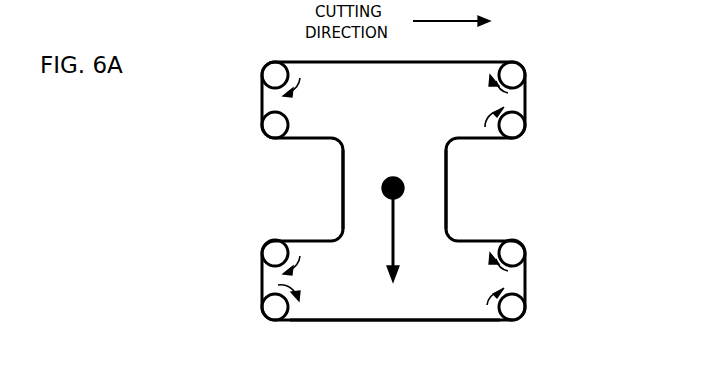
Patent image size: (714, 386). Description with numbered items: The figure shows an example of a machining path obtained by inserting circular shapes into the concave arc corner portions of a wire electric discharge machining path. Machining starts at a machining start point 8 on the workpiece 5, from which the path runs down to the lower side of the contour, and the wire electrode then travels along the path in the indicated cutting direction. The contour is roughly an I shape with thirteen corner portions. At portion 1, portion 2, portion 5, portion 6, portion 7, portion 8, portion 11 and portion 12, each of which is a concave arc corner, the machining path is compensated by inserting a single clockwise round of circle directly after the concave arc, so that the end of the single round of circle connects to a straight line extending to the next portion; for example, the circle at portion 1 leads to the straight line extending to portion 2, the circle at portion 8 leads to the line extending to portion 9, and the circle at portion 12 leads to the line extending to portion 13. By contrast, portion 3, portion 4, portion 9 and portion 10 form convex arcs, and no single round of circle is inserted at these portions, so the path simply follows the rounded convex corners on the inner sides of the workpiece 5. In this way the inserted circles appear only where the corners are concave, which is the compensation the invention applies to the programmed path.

The portion 1 is at (262, 302).
The portion 2 is at (262, 255).
The portion 3 is at (322, 213).
The portion 4 is at (322, 170).
The workpiece 5 is at (323, 321).
The portion 6 is at (262, 78).
The portion 7 is at (525, 76).
The machining start point 8 is at (469, 194).
The portion 9 is at (465, 167).
The portion 10 is at (471, 213).
The portion 11 is at (530, 253).
The portion 12 is at (528, 308).
The portion 13 is at (395, 337).